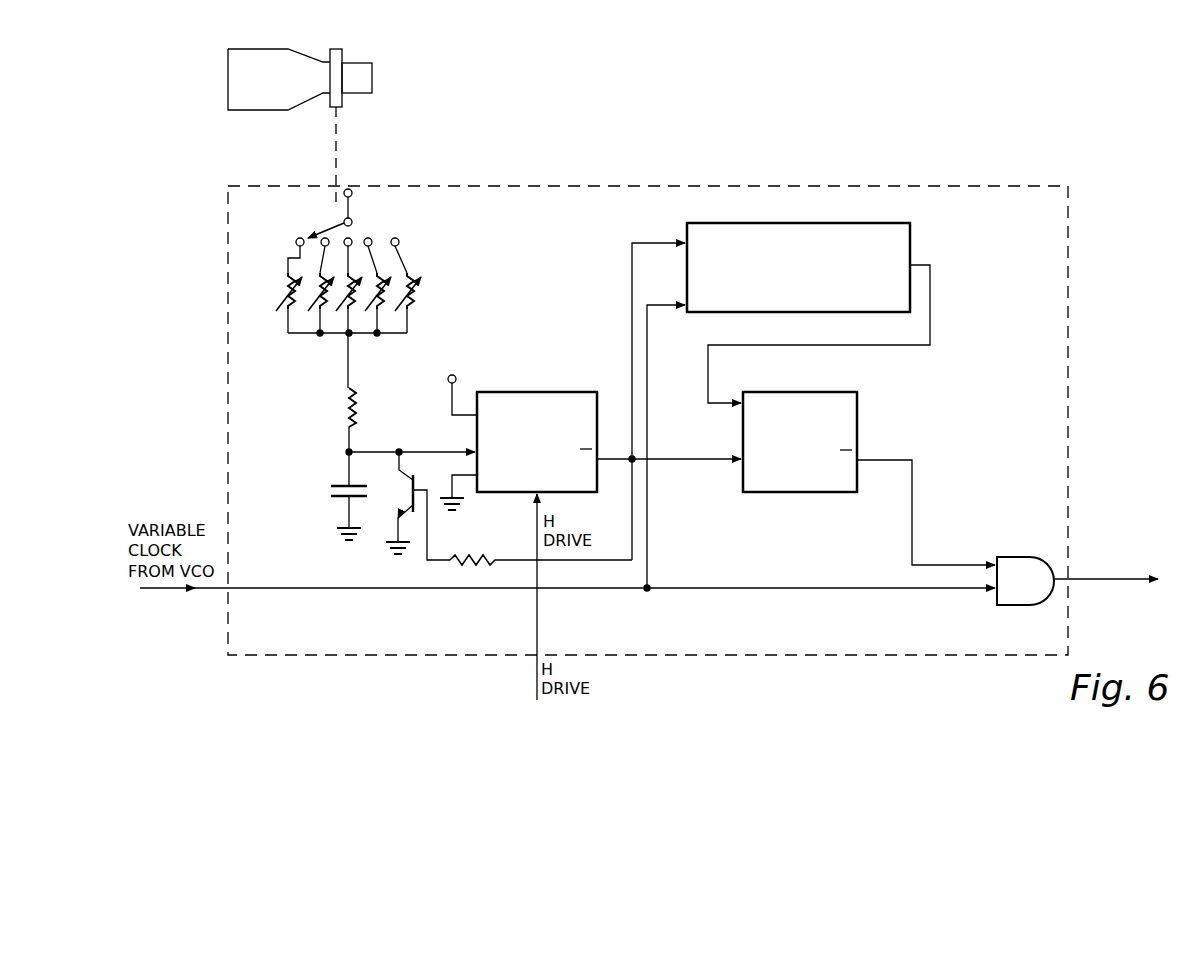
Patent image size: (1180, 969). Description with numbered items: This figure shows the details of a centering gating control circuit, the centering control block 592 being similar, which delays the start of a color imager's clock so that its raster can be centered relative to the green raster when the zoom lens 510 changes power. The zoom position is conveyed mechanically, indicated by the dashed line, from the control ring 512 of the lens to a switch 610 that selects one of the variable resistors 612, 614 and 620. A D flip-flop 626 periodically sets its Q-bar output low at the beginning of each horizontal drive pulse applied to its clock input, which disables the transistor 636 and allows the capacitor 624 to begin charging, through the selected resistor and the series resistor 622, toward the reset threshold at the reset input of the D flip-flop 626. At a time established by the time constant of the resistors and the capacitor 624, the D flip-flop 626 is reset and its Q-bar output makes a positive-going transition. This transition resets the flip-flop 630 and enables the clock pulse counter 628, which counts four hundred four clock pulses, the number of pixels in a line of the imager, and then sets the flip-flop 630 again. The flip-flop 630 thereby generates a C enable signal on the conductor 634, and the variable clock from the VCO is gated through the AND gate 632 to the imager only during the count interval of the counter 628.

The zoom lens 510 is at (253, 110).
The control ring 512 is at (345, 110).
The centering control block 592 is at (272, 186).
The switch 610 is at (402, 227).
The resistor 612 is at (286, 280).
The resistor 614 is at (317, 308).
The resistor 620 is at (422, 292).
The resistor 622 is at (343, 402).
The capacitor 624 is at (334, 494).
The D flip-flop 626 is at (560, 392).
The clock pulse counter 628 is at (912, 236).
The flip-flop 630 is at (828, 392).
The AND gate 632 is at (1018, 557).
The conductor 634 is at (962, 561).
The transistor 636 is at (420, 506).